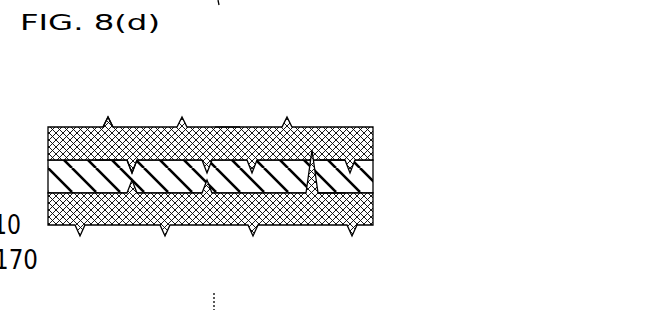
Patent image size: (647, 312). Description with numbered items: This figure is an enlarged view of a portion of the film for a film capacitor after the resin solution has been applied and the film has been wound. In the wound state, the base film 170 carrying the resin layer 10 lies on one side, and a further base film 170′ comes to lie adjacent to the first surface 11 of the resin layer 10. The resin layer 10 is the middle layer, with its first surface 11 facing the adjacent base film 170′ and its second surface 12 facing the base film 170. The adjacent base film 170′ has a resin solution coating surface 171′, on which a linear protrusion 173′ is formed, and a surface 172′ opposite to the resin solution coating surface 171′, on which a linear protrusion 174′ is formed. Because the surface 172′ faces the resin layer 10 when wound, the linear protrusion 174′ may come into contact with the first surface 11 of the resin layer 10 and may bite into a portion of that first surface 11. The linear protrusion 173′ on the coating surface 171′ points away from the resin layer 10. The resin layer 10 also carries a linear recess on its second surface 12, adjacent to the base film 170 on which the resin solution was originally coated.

The resin layer 10 is at (360, 175).
The first surface 11 is at (333, 158).
The second surface 12 is at (333, 206).
The base film 170 is at (365, 210).
The base film 170′ is at (365, 138).
The resin solution coating surface 171′ is at (225, 128).
The surface opposite to the resin solution coating surface 172′ is at (107, 164).
The linear protrusion 173′ is at (106, 121).
The linear protrusion 174′ is at (165, 172).